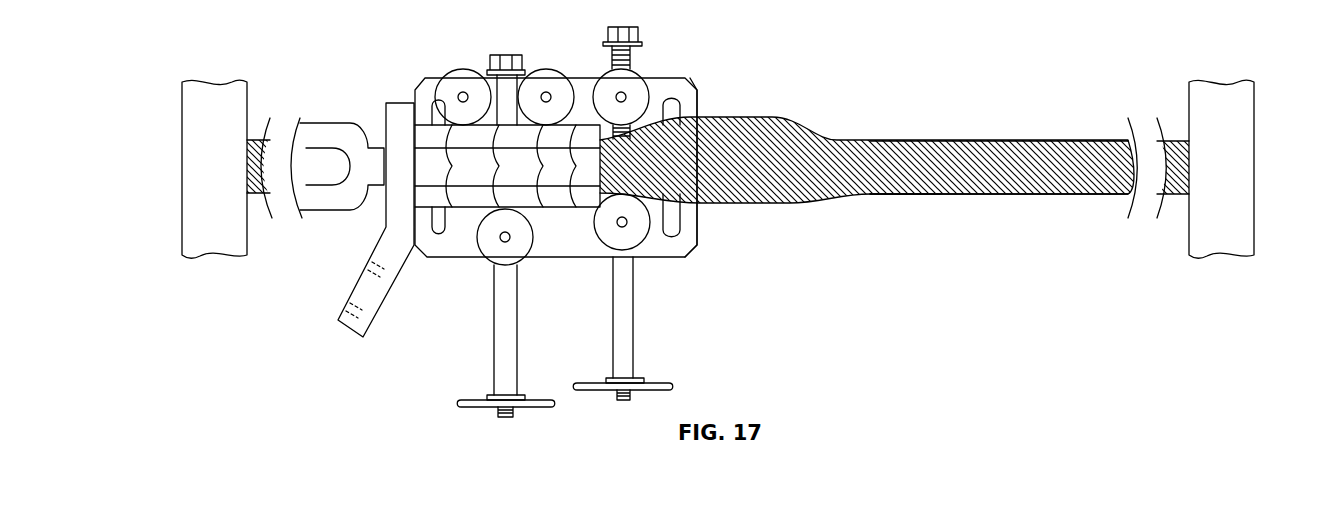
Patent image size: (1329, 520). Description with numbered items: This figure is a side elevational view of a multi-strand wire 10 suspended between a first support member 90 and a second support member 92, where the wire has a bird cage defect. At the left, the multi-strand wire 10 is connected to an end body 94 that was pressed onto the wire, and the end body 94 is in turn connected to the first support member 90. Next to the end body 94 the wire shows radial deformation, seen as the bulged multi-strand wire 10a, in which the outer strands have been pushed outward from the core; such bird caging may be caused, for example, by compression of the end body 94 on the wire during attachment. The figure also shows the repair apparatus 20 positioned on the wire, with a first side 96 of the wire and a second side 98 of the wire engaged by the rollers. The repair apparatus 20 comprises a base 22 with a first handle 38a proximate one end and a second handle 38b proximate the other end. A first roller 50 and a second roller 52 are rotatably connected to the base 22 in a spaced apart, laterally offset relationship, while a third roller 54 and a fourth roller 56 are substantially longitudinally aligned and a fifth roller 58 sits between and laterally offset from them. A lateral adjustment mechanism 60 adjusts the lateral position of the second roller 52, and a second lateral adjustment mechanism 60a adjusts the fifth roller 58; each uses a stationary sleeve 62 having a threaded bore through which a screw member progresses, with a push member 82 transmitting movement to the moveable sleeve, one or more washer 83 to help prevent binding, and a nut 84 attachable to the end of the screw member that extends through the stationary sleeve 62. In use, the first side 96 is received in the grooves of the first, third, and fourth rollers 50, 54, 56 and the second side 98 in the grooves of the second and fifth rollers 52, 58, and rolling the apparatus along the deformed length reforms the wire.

The multi-strand wire 10 is at (867, 176).
The multi-strand wire having a bird cage defect 10a is at (820, 205).
The repair apparatus 20 is at (465, 258).
The base 22 is at (698, 90).
The first handle 38a is at (412, 102).
The second handle 38b is at (698, 104).
The first roller 50 is at (645, 73).
The second roller 52 is at (648, 258).
The third roller 54 is at (466, 70).
The fourth roller 56 is at (549, 70).
The fifth roller 58 is at (532, 260).
The lateral adjustment mechanism 60 is at (635, 292).
The second lateral adjustment mechanism 60a is at (494, 356).
The stationary sleeve 62 is at (528, 76).
The push member 82 is at (493, 292).
The washer 83 is at (482, 398).
The nut 84 is at (499, 55).
The first support member 90 is at (182, 168).
The second support member 92 is at (1254, 168).
The end body 94 is at (478, 162).
The first side of the multi-strand wire 96 is at (1062, 141).
The second side of the multi-strand wire 98 is at (912, 195).